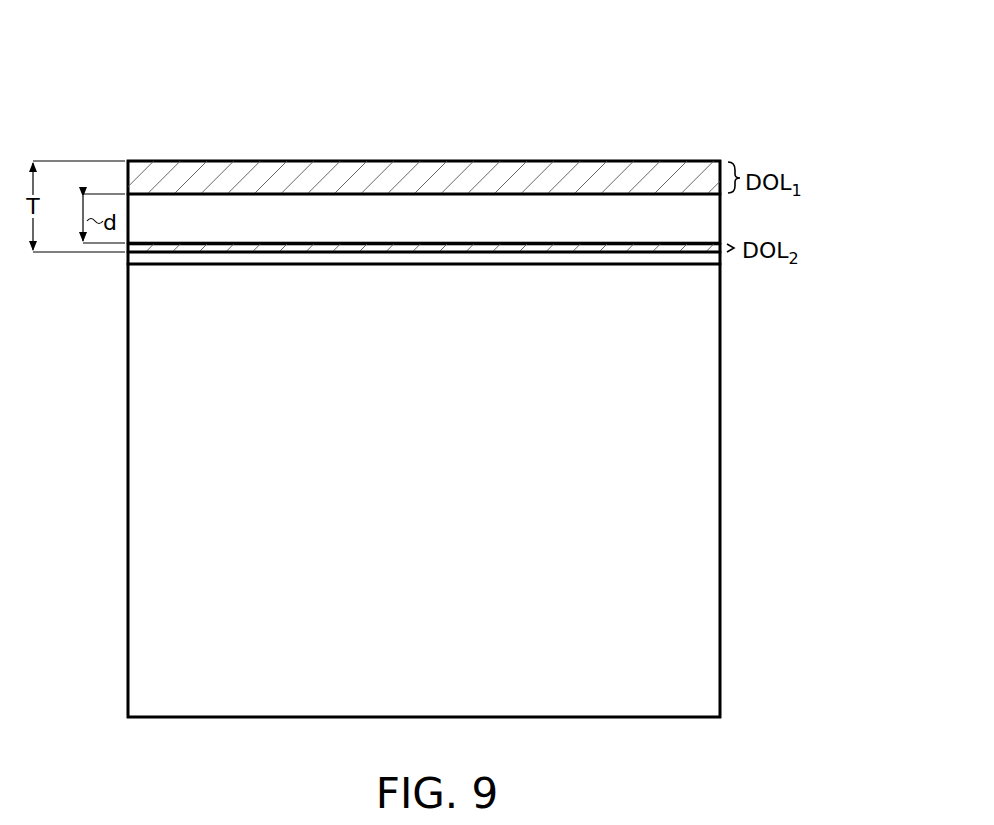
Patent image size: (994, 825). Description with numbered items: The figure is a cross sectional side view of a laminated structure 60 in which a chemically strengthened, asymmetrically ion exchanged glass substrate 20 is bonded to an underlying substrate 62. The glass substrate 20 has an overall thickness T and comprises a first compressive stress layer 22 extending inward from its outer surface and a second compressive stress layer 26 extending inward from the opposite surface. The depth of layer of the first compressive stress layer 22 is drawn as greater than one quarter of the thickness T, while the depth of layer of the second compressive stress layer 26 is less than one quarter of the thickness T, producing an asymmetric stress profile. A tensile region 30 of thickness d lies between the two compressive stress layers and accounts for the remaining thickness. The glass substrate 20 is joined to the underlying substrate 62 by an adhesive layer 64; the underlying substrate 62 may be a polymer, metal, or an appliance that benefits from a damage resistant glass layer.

The glass substrate 20 is at (618, 149).
The laminated structure 60 is at (424, 374).
The first compressive stress layer 22 is at (385, 170).
The tensile region 30 is at (209, 208).
The second compressive stress layer 26 is at (145, 248).
The adhesive layer 64 is at (134, 258).
The underlying substrate 62 is at (140, 430).